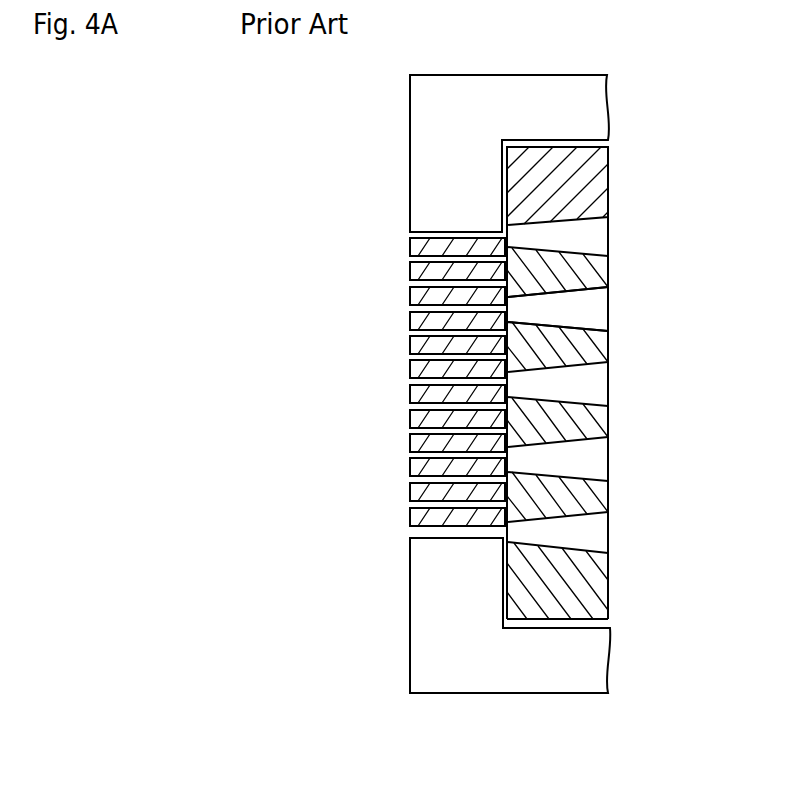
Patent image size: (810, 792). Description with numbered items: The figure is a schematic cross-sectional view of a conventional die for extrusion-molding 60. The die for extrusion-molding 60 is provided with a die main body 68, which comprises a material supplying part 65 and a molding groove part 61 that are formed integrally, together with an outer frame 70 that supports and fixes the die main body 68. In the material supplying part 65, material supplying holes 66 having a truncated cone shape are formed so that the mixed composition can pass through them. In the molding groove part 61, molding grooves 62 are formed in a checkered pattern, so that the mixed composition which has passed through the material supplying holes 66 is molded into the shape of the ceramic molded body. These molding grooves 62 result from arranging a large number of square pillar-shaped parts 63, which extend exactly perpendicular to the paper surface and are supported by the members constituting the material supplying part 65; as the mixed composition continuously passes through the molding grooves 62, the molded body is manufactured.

The die for extrusion-molding 60 is at (622, 79).
The molding groove part 61 is at (396, 353).
The molding grooves 62 is at (415, 282).
The pillar-shaped parts 63 is at (415, 447).
The material supplying part 65 is at (617, 385).
The material supplying holes 66 is at (571, 303).
The die main body 68 is at (622, 212).
The outer frame 70 is at (385, 630).